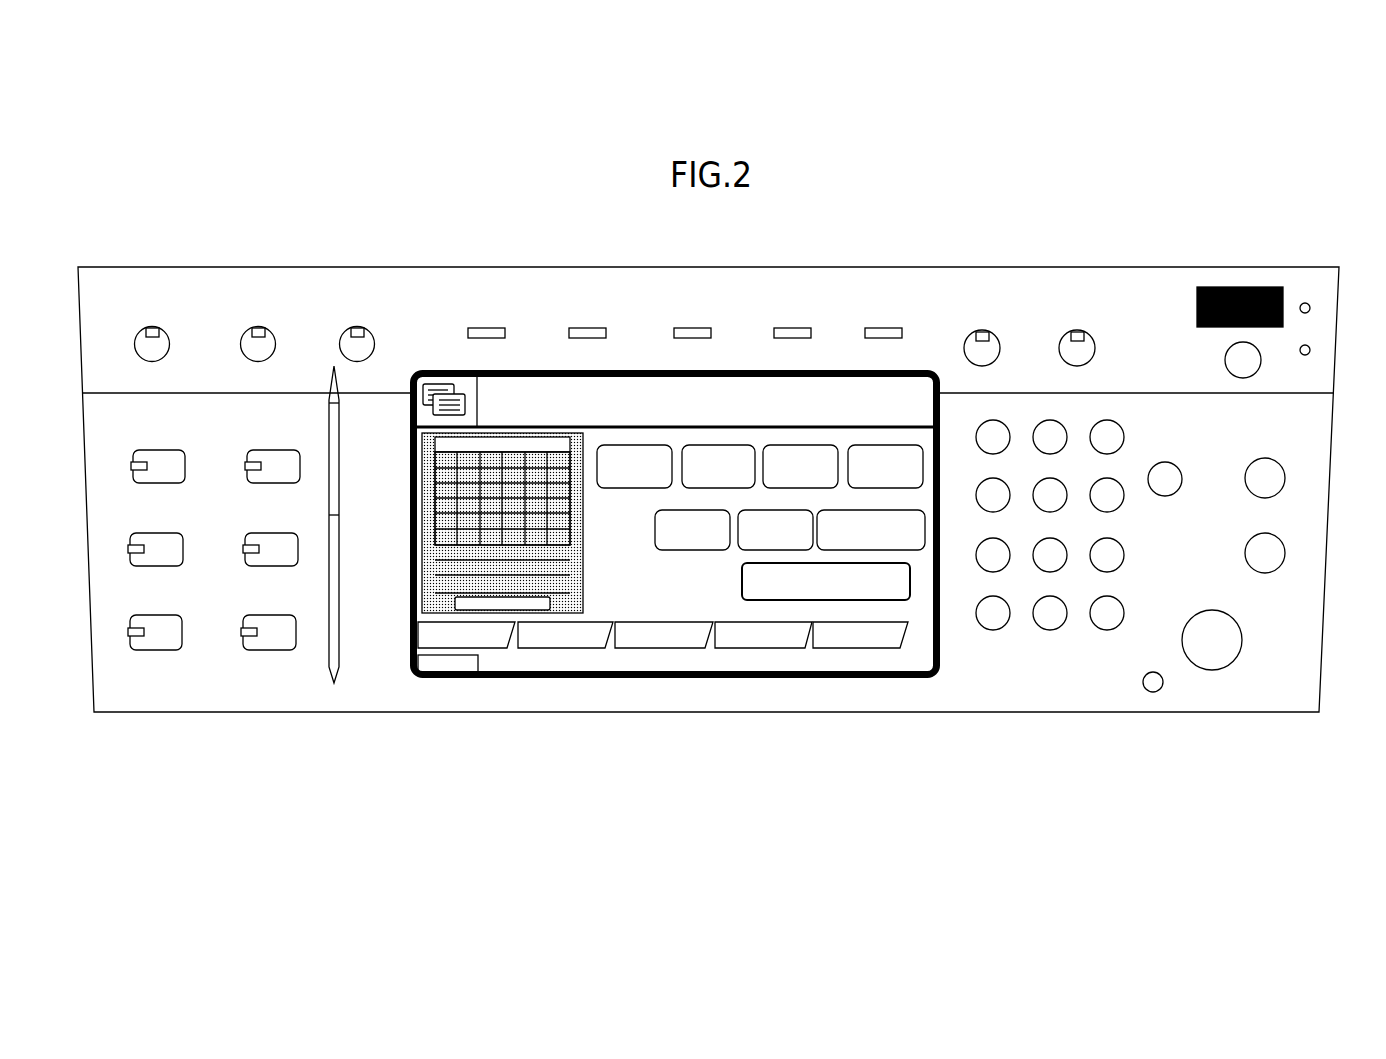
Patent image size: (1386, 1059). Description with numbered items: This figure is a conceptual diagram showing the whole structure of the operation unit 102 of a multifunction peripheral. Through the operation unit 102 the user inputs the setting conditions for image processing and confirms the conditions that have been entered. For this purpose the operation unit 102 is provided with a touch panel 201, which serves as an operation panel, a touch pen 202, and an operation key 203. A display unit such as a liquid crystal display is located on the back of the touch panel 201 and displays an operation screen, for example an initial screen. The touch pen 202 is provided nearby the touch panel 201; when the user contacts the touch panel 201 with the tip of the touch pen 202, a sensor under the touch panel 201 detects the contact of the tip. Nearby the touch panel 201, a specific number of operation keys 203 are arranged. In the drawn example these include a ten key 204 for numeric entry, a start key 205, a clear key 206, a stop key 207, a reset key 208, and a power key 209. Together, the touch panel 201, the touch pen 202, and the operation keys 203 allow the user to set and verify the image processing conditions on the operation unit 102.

The operation unit 102 is at (726, 529).
The touch panel 201 is at (514, 694).
The touch pen 202 is at (333, 684).
The operation key 203 is at (1117, 604).
The ten key 204 is at (1044, 652).
The start key 205 is at (1211, 652).
The clear key 206 is at (1157, 494).
The stop key 207 is at (1266, 565).
The reset key 208 is at (1268, 492).
The power key 209 is at (1250, 369).